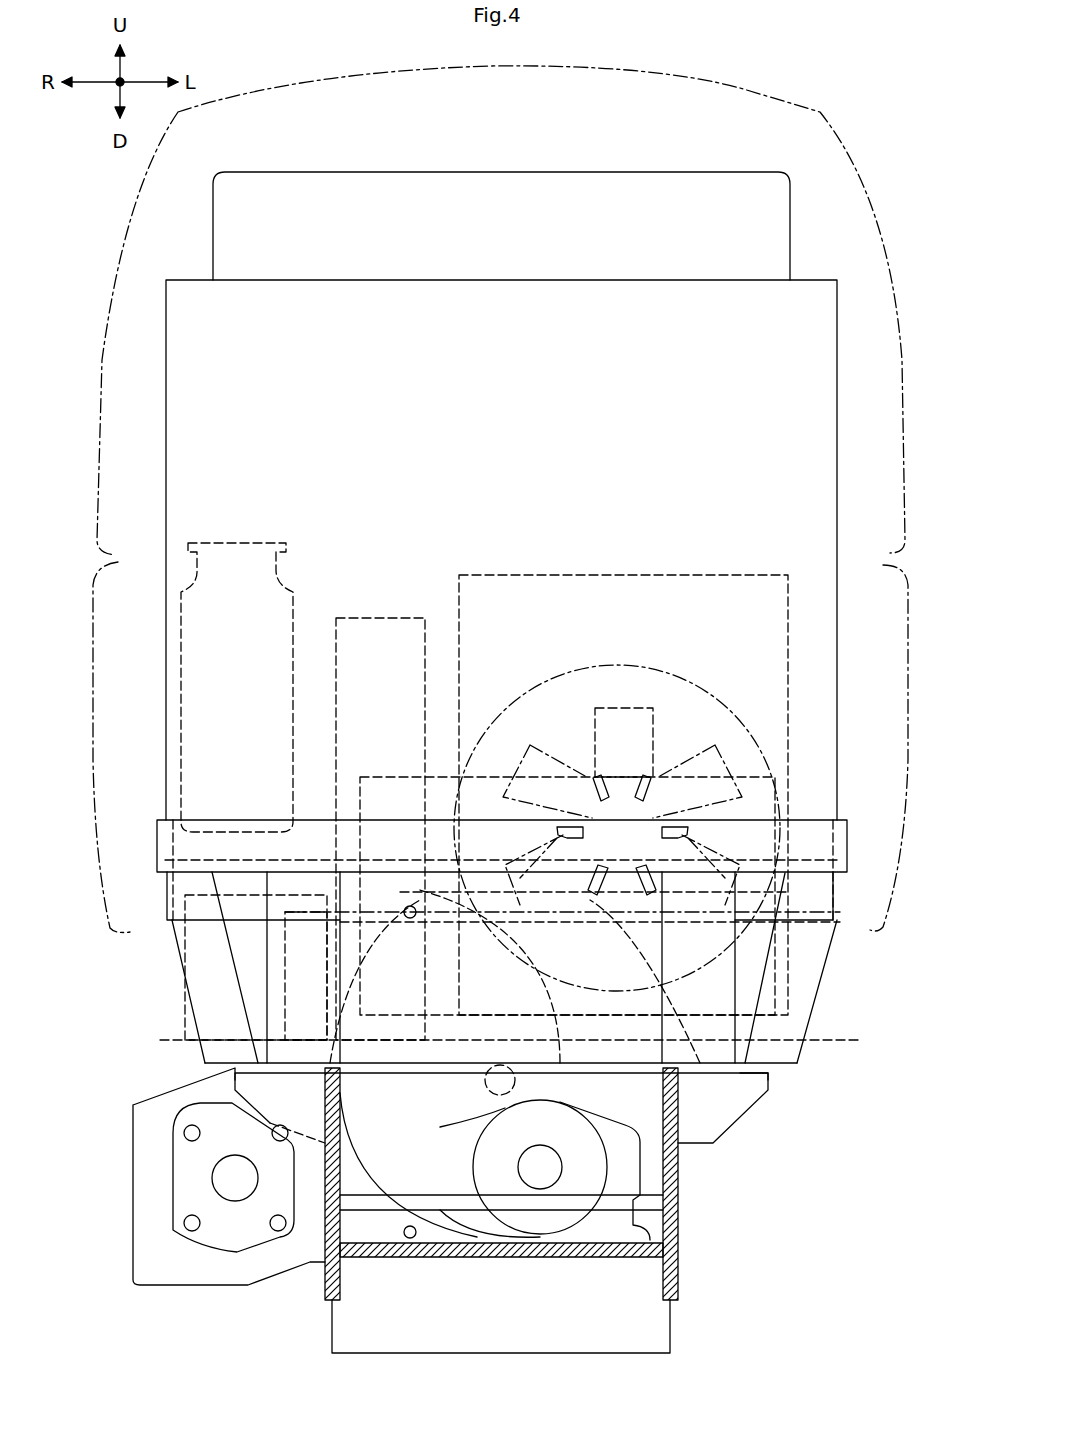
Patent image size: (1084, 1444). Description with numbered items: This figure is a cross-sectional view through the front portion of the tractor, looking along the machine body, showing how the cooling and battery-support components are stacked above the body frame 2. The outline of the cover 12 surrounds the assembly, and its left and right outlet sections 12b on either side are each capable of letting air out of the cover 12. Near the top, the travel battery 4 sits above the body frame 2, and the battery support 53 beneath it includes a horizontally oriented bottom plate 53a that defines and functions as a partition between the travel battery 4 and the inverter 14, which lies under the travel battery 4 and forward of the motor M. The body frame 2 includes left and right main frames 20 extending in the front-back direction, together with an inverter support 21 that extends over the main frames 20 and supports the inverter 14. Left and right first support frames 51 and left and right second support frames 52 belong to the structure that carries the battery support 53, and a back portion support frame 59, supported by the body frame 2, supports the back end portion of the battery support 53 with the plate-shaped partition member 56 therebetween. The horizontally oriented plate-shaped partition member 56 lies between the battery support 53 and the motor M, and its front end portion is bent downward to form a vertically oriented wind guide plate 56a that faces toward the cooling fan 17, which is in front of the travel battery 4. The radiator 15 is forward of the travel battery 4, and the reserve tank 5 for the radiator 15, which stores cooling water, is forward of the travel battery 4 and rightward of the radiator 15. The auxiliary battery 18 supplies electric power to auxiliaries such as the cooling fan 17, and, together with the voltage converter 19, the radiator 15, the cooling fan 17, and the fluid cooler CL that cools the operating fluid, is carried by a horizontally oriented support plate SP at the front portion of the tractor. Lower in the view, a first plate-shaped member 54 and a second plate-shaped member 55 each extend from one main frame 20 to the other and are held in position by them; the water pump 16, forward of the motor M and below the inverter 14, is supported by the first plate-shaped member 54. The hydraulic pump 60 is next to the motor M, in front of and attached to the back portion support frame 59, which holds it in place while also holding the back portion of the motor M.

The body frame 2 is at (682, 1270).
The travel battery 4 is at (515, 187).
The reserve tank 5 is at (257, 543).
The cover 12 is at (740, 88).
The outlet section 12b is at (93, 750).
The inverter 14 is at (250, 1000).
The radiator 15 is at (595, 575).
The water pump 16 is at (455, 1135).
The cooling fan 17 is at (642, 668).
The auxiliary battery 18 is at (183, 1028).
The voltage converter 19 is at (405, 617).
The main frame 20 is at (322, 1285).
The inverter support 21 is at (740, 1105).
The first support frame 51 is at (273, 885).
The second support frame 52 is at (182, 938).
The battery support 53 is at (847, 837).
The bottom plate 53a is at (802, 860).
The first plate-shaped member 54 is at (620, 1260).
The second plate-shaped member 55 is at (353, 1207).
The plate-shaped partition member 56 is at (158, 887).
The wind guide plate 56a is at (250, 918).
The back portion support frame 59 is at (145, 1148).
The hydraulic pump 60 is at (222, 1232).
The motor M is at (447, 1153).
The support plate SP is at (828, 1033).
The fluid cooler CL is at (378, 777).